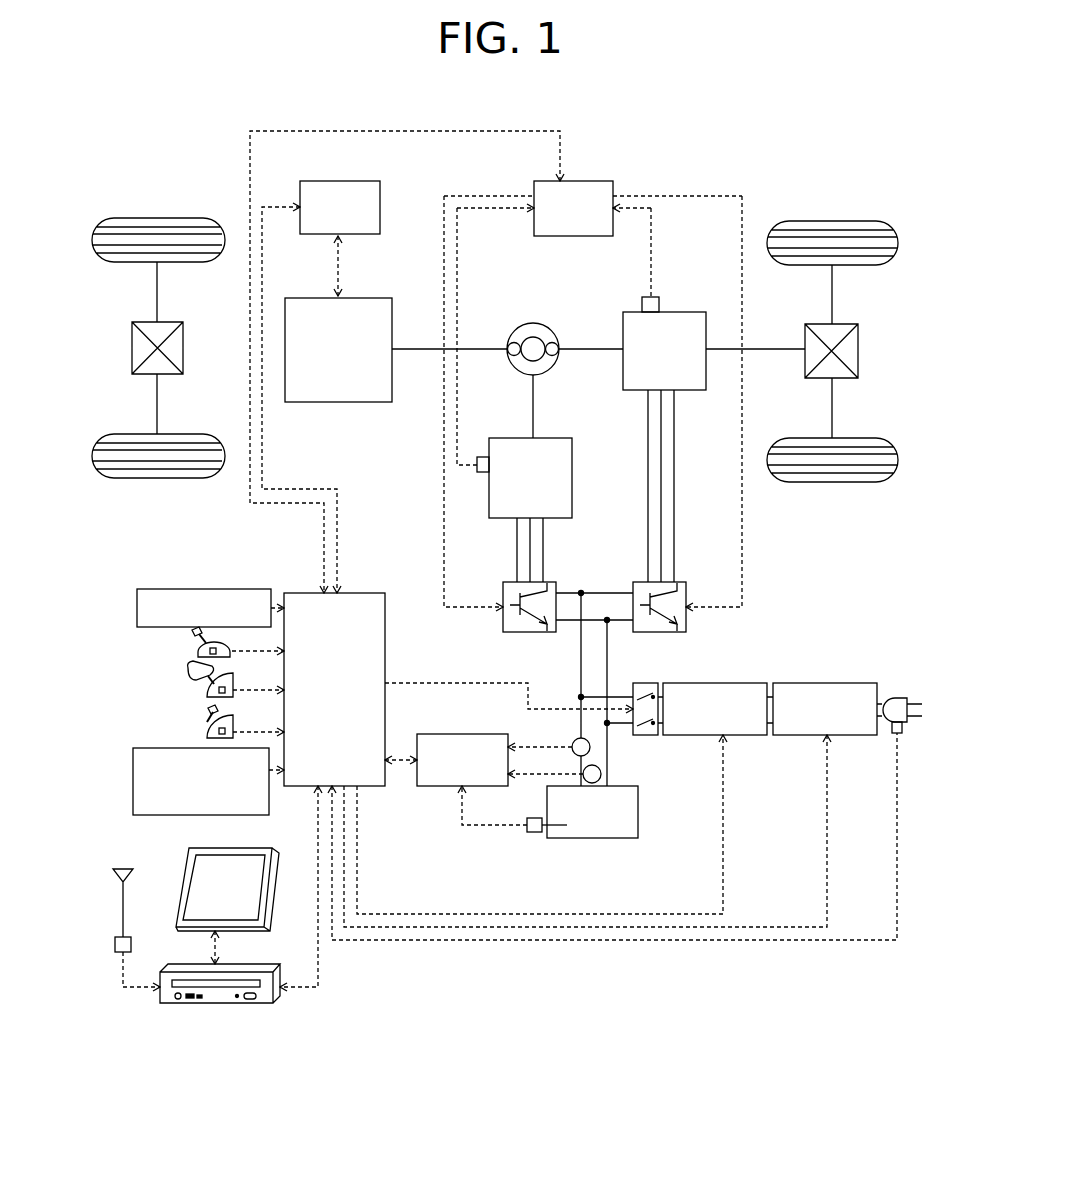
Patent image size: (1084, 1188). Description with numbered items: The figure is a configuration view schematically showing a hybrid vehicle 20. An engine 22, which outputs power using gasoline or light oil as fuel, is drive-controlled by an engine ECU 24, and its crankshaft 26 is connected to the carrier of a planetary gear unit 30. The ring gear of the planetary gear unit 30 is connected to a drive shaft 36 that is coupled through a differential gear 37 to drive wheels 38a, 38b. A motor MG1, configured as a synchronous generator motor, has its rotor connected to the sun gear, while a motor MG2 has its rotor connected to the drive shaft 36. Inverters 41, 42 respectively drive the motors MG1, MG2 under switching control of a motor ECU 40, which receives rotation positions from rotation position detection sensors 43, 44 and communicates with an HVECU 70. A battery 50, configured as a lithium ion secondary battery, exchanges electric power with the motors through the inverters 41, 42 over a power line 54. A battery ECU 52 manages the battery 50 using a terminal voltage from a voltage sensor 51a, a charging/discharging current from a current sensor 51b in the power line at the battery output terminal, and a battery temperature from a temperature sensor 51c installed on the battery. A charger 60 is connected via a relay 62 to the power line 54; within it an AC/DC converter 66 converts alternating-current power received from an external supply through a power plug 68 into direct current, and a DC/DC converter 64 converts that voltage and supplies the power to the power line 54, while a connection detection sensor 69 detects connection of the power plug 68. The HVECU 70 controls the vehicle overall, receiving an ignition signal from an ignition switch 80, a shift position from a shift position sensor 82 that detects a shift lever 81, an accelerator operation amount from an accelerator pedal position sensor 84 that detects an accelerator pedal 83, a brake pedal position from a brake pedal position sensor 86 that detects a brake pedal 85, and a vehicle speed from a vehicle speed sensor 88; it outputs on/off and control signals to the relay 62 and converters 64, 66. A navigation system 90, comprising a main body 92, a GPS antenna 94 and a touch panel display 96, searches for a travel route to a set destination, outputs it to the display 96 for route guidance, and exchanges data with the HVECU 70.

The hybrid vehicle 20 is at (707, 143).
The engine 22 is at (366, 297).
The engine ECU 24 is at (340, 180).
The crankshaft 26 is at (487, 348).
The planetary gear unit 30 is at (533, 322).
The drive shaft 36 is at (773, 348).
The differential gear 37 is at (845, 323).
The drive wheel 38a is at (833, 220).
The drive wheel 38b is at (833, 483).
The motor ECU 40 is at (585, 180).
The inverter 41 is at (550, 581).
The inverter 42 is at (680, 581).
The rotation position detection sensor 43 is at (485, 456).
The rotation position detection sensor 44 is at (653, 296).
The battery 50 is at (640, 811).
The voltage sensor 51a is at (601, 774).
The current sensor 51b is at (590, 747).
The temperature sensor 51c is at (530, 833).
The battery ECU 52 is at (462, 733).
The power line 54 is at (607, 658).
The charger 60 is at (790, 645).
The relay 62 is at (644, 682).
The DC/DC converter 64 is at (724, 682).
The AC/DC converter 66 is at (840, 682).
The power plug 68 is at (892, 698).
The connection detection sensor 69 is at (893, 736).
The HVECU 70 is at (360, 592).
The ignition switch 80 is at (137, 605).
The shift lever 81 is at (197, 634).
The shift position sensor 82 is at (200, 650).
The accelerator pedal 83 is at (190, 672).
The accelerator pedal position sensor 84 is at (207, 690).
The brake pedal 85 is at (205, 715).
The brake pedal position sensor 86 is at (207, 732).
The vehicle speed sensor 88 is at (133, 768).
The navigation system 90 is at (175, 846).
The main body 92 is at (215, 1005).
The GPS antenna 94 is at (135, 945).
The touch panel display 96 is at (230, 850).
The motor MG1 is at (555, 437).
The motor MG2 is at (690, 311).